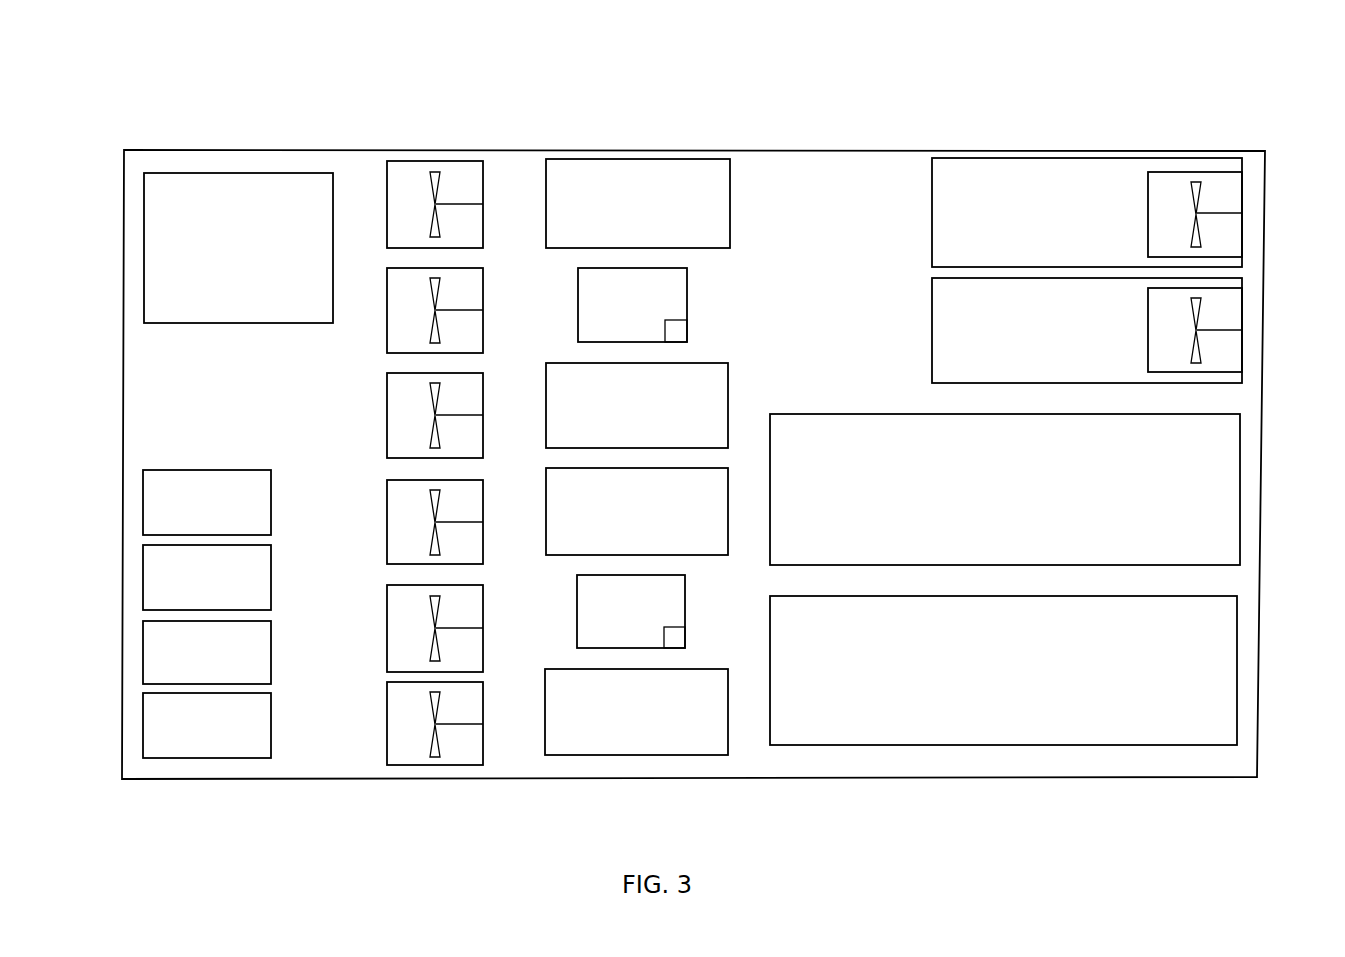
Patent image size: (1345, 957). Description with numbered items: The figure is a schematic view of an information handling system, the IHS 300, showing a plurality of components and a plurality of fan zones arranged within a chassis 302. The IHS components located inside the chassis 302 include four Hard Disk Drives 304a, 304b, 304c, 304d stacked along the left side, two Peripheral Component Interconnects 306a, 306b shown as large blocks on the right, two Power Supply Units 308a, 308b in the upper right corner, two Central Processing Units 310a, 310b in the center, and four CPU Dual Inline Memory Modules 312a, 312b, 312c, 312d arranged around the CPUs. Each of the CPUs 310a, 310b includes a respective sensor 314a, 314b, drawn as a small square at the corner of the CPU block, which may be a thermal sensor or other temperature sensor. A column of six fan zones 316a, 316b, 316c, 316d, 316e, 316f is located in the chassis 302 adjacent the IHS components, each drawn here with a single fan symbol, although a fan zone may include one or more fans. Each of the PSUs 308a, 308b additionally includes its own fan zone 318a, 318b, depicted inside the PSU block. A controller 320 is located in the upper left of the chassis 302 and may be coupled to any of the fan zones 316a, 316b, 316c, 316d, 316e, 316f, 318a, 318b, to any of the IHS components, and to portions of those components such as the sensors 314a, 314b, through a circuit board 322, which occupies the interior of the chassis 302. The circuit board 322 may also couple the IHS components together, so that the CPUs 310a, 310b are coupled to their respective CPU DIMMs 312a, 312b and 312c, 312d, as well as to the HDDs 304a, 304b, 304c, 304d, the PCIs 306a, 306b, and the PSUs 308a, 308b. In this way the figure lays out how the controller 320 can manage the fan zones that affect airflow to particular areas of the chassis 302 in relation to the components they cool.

The IHS 300 is at (1250, 108).
The chassis 302 is at (1067, 778).
The Hard Disk Drive 304a is at (182, 527).
The Hard Disk Drive 304b is at (182, 602).
The Hard Disk Drive 304c is at (182, 677).
The Hard Disk Drive 304d is at (182, 750).
The Peripheral Component Interconnect 306a is at (981, 516).
The Peripheral Component Interconnect 306b is at (981, 692).
The Power Supply Unit 308a is at (1063, 239).
The Power Supply Unit 308b is at (1063, 355).
The Central Processing Unit 310a is at (608, 331).
The Central Processing Unit 310b is at (607, 638).
The CPU Dual Inline Memory Module 312a is at (614, 241).
The CPU Dual Inline Memory Module 312b is at (614, 442).
The CPU Dual Inline Memory Module 312c is at (614, 548).
The CPU Dual Inline Memory Module 312d is at (614, 749).
The sensor 314a is at (687, 320).
The sensor 314b is at (685, 627).
The fan zone 316a is at (387, 160).
The fan zone 316b is at (387, 322).
The fan zone 316c is at (387, 417).
The fan zone 316d is at (387, 523).
The fan zone 316e is at (387, 628).
The fan zone 316f is at (387, 714).
The fan zone 318a is at (1243, 193).
The fan zone 318b is at (1243, 307).
The controller 320 is at (218, 274).
The circuit board 322 is at (813, 182).